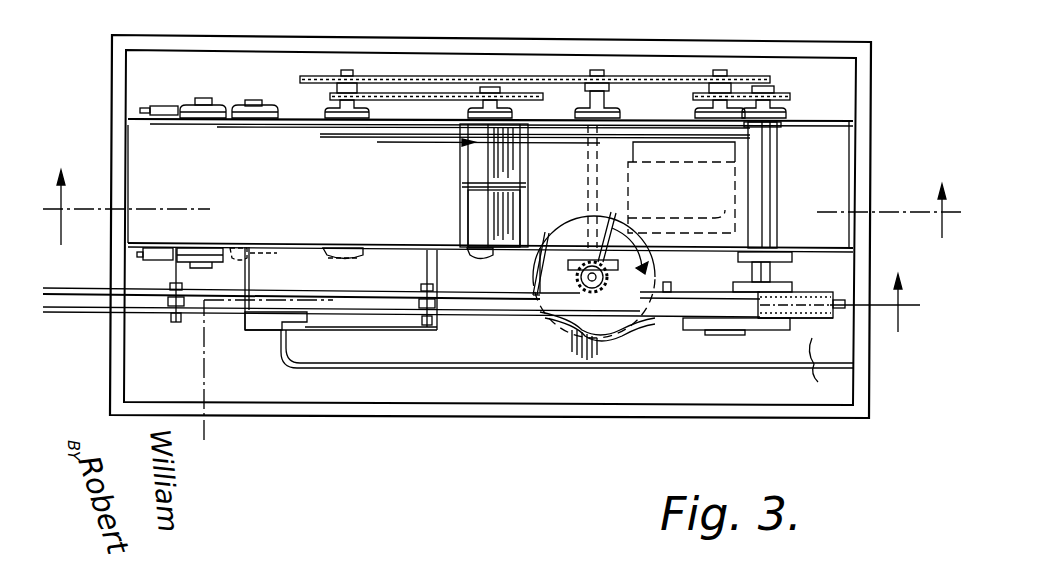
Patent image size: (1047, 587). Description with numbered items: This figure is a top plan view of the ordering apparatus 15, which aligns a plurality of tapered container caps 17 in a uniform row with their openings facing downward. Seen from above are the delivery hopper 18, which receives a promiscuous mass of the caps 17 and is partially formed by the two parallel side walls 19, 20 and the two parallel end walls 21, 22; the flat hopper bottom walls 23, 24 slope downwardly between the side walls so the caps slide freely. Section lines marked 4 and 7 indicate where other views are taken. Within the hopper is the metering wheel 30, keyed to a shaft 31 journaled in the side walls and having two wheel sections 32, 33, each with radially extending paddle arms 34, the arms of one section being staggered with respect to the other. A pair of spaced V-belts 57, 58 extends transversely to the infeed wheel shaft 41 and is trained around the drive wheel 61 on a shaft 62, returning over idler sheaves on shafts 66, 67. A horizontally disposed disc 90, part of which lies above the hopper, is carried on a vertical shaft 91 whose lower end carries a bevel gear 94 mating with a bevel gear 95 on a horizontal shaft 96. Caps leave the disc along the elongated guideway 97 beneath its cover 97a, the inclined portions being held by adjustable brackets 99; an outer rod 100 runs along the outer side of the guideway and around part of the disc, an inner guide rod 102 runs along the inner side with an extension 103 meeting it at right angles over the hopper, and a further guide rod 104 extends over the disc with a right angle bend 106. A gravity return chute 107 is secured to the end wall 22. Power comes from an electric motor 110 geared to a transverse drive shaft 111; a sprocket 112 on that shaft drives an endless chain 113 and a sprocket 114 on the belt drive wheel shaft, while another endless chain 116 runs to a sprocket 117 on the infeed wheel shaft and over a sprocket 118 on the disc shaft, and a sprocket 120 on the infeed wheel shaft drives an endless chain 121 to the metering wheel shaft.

The section line 4- 4 is at (504, 216).
The section line 7- 7 is at (558, 371).
The ordering apparatus 15 is at (938, 60).
The container caps 17 is at (844, 296).
The delivery hopper 18 is at (260, 174).
The side wall 19 is at (316, 239).
The side wall 20 is at (302, 126).
The end wall 21 is at (130, 158).
The end wall 22 is at (854, 170).
The hopper bottom wall 23 is at (385, 249).
The hopper bottom wall 24 is at (838, 146).
The metering wheel 30 is at (432, 143).
The shaft 31 is at (540, 82).
The wheel section 32 is at (522, 205).
The wheel section 33 is at (530, 167).
The paddle arms 34 is at (462, 169).
The infeed wheel shaft 41 is at (348, 70).
The V-belt 57 is at (823, 369).
The V-belt 58 is at (826, 290).
The drive wheel 61 is at (824, 328).
The shaft 62 is at (764, 264).
The shaft 66 is at (200, 96).
The shaft 67 is at (254, 100).
The disc 90 is at (620, 218).
The shaft 91 is at (622, 338).
The bevel gear 94 is at (558, 330).
The bevel gear 95 is at (573, 277).
The horizontal shaft 96 is at (590, 178).
The guideway 97 is at (96, 284).
The cover 97a is at (70, 324).
The adjustable brackets 99 is at (176, 322).
The rod 100 is at (310, 332).
The guide rod 102 is at (316, 284).
The extension 103 is at (542, 246).
The guide rod 104 is at (706, 292).
The right angle bend 106 is at (613, 212).
The gravity return chute 107 is at (405, 370).
The electric motor 110 is at (758, 160).
The drive shaft 111 is at (720, 76).
The sprocket 112 is at (690, 98).
The endless chain 113 is at (752, 84).
The sprocket 114 is at (790, 96).
The endless chain 116 is at (450, 76).
The sprocket 117 is at (374, 83).
The sprocket 118 is at (614, 78).
The sprocket 120 is at (328, 101).
The endless chain 121 is at (424, 80).